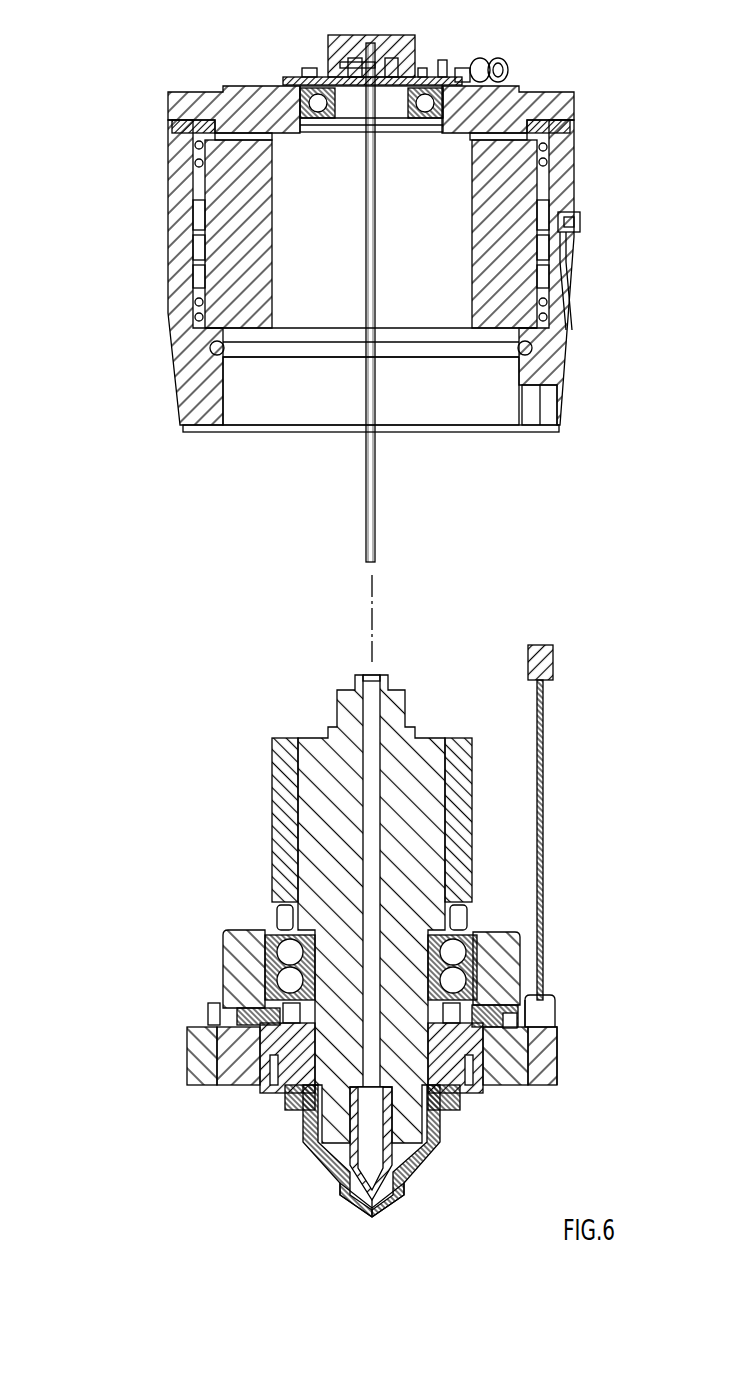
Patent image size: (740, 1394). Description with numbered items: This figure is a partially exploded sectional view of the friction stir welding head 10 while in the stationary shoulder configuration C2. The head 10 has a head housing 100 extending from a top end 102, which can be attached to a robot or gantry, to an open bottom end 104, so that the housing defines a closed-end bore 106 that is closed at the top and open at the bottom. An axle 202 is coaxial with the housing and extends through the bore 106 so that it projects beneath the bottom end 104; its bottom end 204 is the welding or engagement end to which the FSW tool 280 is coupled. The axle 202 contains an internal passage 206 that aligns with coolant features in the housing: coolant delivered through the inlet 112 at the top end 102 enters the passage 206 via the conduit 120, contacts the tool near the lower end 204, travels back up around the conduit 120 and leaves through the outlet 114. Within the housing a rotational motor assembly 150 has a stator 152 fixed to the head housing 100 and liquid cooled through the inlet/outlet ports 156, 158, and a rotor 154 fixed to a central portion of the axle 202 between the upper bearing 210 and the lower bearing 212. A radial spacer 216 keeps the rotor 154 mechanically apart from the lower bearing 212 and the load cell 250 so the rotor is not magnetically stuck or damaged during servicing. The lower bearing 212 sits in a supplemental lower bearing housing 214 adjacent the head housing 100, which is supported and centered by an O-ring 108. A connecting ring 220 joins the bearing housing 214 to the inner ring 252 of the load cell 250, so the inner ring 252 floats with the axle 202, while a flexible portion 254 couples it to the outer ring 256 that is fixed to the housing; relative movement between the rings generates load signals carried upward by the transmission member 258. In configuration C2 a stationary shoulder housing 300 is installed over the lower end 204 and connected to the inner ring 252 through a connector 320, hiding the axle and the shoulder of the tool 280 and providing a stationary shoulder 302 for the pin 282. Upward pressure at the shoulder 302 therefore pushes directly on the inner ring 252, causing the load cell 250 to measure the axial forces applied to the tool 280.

The head 10 is at (155, 932).
The stationary shoulder configuration C2 is at (137, 867).
The head housing 100 is at (178, 322).
The top end 102 is at (183, 428).
The bottom end 104 is at (258, 95).
The closed-end bore 106 is at (418, 412).
The O-ring 108 is at (217, 352).
The inlet 112 is at (397, 35).
The outlet 114 is at (372, 71).
The conduit 120 is at (367, 455).
The motor assembly 150 is at (205, 185).
The stator 152 is at (512, 262).
The rotor 154 is at (270, 793).
The inlet/outlet 156 is at (582, 222).
The inlet/outlet 158 is at (566, 281).
The axle 202 is at (432, 826).
The bottom end of the axle 204 is at (342, 1157).
The internal passage 206 is at (370, 718).
The upper bearing 210 is at (437, 100).
The lower bearing 212 is at (455, 983).
The lower bearing housing 214 is at (512, 998).
The spacer 216 is at (268, 917).
The connecting ring 220 is at (507, 1018).
The load cell 250 is at (558, 1067).
The inner ring 252 is at (263, 1077).
The flexible portion 254 is at (238, 1073).
The outer ring 256 is at (197, 1048).
The transmission member 258 is at (553, 660).
The FSW tool 280 is at (352, 1197).
The pin 282 is at (370, 1217).
The stationary shoulder housing 300 is at (440, 1153).
The stationary shoulder 302 is at (385, 1223).
The connector 320 is at (448, 1107).